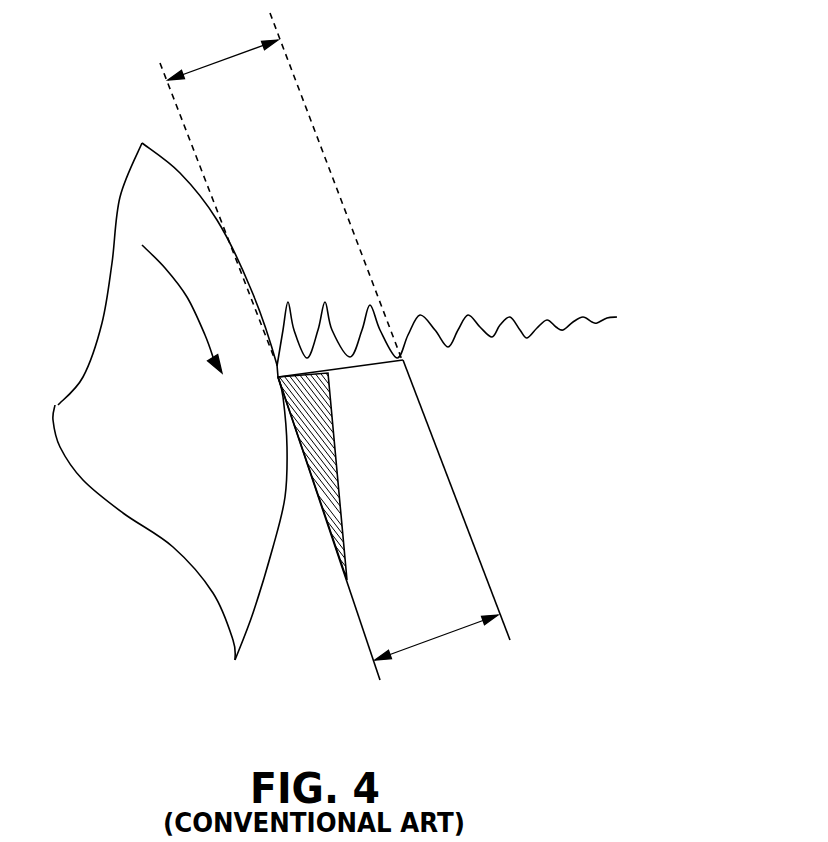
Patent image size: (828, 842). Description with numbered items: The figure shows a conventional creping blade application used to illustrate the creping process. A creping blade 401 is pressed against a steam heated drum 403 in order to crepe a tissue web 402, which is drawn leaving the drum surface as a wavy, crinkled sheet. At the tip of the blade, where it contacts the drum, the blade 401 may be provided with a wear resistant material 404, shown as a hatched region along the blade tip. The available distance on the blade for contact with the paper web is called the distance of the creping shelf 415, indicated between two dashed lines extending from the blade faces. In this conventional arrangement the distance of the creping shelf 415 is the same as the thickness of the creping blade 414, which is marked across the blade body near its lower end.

The creping blade 401 is at (450, 520).
The tissue web 402 is at (632, 303).
The steam heated drum 403 is at (192, 405).
The wear resistant material 404 is at (323, 522).
The thickness of the creping blade 414 is at (437, 635).
The distance of the creping shelf 415 is at (220, 62).